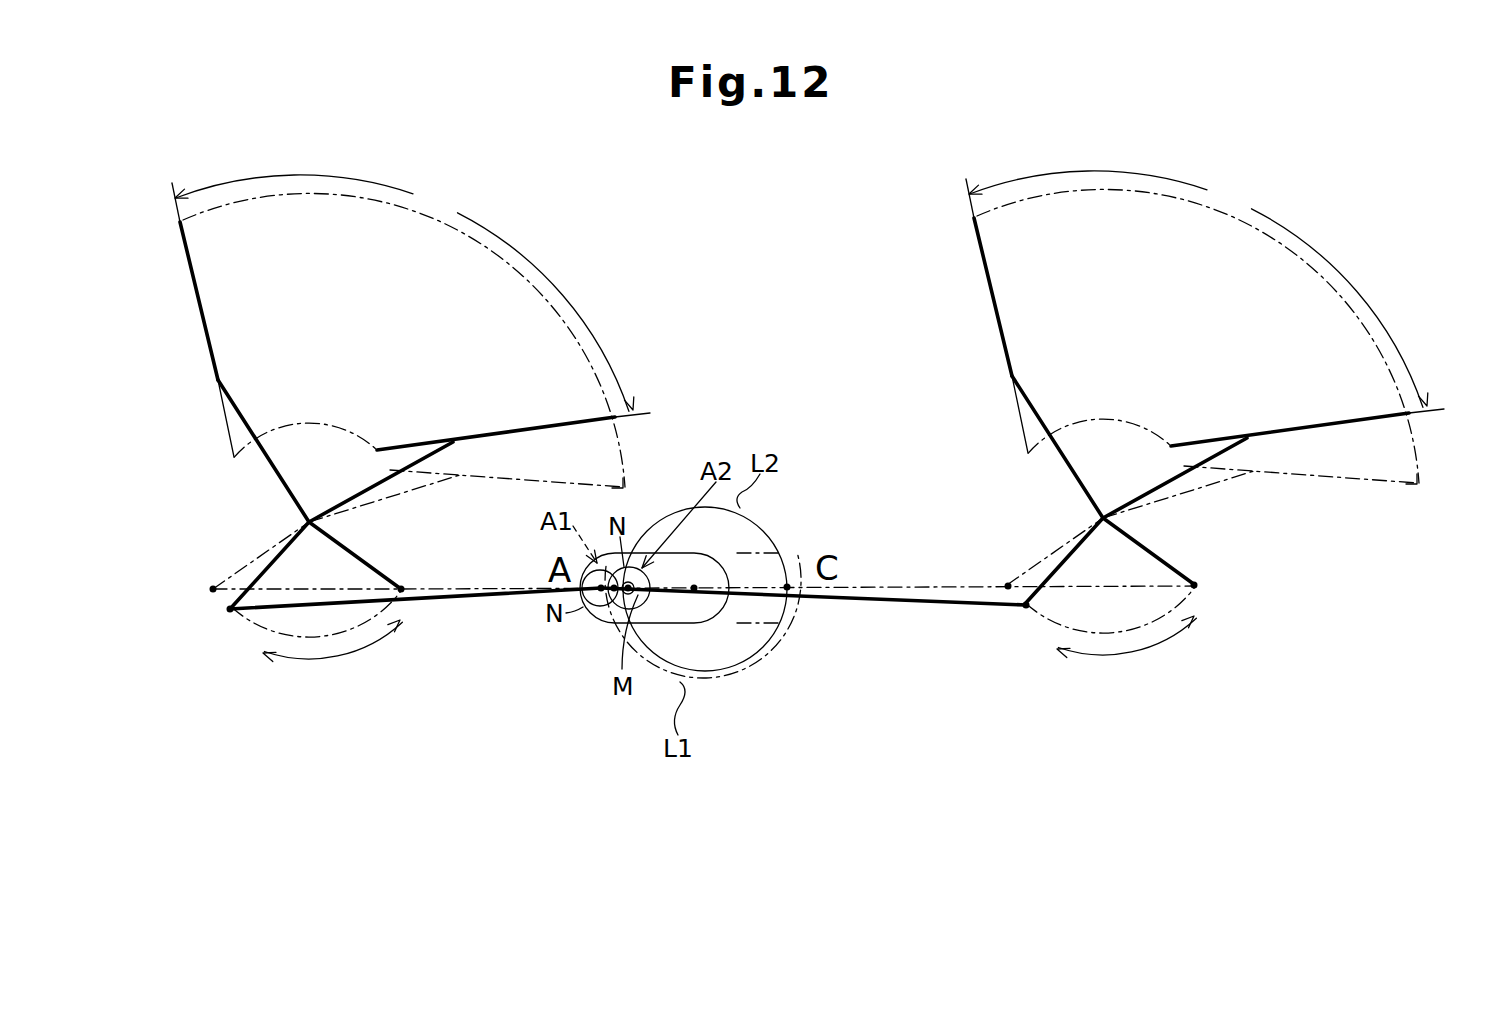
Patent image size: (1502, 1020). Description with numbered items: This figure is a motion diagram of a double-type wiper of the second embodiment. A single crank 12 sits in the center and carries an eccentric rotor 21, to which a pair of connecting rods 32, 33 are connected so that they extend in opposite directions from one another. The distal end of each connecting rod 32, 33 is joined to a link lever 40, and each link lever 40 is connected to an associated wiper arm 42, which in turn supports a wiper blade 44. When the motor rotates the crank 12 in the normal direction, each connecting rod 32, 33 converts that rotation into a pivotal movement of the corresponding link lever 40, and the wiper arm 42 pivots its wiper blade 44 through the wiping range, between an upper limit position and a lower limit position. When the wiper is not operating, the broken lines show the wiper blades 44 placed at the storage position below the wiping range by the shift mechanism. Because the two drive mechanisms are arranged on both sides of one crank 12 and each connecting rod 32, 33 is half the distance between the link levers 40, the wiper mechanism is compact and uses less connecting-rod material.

The crank 12 is at (692, 555).
The eccentric rotor 21 is at (650, 598).
The connecting rod 32 is at (907, 600).
The connecting rod 33 is at (446, 600).
The link lever 40 is at (250, 563).
The wiper arm 42 is at (357, 492).
The wiper blade 44 is at (523, 431).